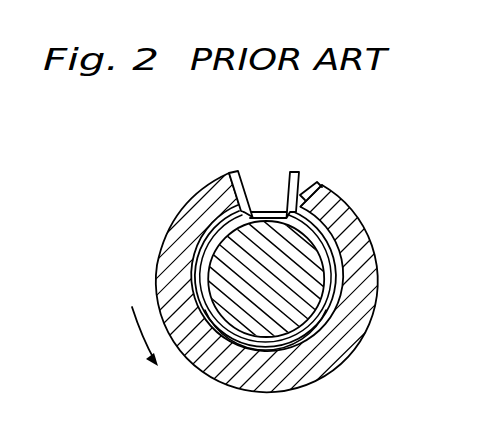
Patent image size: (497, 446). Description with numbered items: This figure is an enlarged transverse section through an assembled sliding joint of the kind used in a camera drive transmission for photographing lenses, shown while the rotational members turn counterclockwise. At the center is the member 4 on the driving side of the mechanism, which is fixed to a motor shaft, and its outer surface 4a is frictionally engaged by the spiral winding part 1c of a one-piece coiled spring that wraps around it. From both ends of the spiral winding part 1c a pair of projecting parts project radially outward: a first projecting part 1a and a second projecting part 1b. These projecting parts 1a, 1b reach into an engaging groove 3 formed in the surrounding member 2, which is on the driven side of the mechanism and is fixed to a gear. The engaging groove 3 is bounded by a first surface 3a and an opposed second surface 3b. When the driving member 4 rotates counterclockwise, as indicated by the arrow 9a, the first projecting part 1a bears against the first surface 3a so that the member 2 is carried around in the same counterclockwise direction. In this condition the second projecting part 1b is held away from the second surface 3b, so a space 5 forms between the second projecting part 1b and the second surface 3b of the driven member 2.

The first projecting part 1a is at (241, 207).
The second projecting part 1b is at (287, 175).
The spiral winding part 1c is at (322, 320).
The member on the driven side 2 is at (160, 254).
The engaging groove 3 is at (263, 203).
The first surface 3a is at (240, 172).
The second surface 3b is at (323, 188).
The member on the driving side 4 is at (307, 261).
The outer surface 4a is at (328, 291).
The space 5 is at (302, 190).
The arrow 9a is at (143, 334).